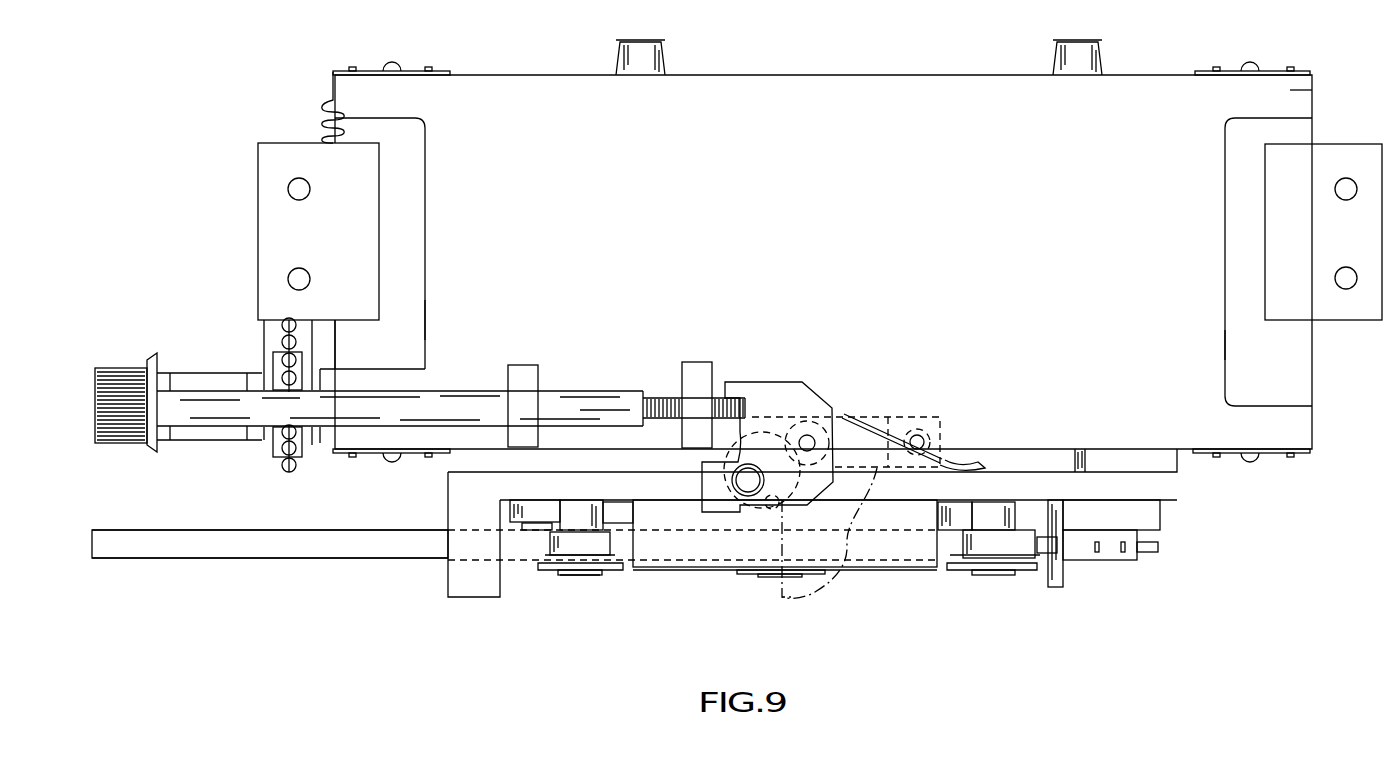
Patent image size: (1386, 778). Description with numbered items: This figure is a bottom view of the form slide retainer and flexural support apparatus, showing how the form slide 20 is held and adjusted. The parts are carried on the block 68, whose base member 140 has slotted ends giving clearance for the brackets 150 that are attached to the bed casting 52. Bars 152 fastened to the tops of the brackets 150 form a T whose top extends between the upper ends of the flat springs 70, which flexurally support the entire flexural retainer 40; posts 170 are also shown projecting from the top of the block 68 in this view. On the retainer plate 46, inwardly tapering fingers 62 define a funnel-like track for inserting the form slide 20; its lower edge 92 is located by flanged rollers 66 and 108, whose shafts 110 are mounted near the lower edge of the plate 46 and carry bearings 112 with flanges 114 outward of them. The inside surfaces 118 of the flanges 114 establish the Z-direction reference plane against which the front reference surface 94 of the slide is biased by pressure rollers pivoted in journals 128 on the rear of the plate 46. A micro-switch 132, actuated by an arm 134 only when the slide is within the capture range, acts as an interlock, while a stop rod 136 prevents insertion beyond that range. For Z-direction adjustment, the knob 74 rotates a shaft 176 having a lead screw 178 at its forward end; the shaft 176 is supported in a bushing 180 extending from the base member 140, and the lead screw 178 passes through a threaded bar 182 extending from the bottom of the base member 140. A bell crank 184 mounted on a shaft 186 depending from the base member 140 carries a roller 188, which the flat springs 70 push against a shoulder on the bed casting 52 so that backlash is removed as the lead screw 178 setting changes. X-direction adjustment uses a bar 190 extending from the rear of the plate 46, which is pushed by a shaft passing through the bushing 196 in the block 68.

The form slide 20 is at (210, 558).
The flexural retainer 40 is at (1315, 388).
The retainer plate 46 is at (1160, 488).
The bed casting 52 is at (797, 590).
The fingers 62 is at (475, 590).
The flanged bearing roller 66 is at (578, 577).
The block 68 is at (1295, 94).
The flat springs 70 is at (415, 71).
The knob 74 is at (132, 362).
The edge 92 is at (408, 550).
The front reference surface 94 is at (320, 560).
The flanged bearing roller 108 is at (985, 595).
The shafts 110 is at (580, 505).
The bearings 112 is at (548, 545).
The flanges 114 is at (605, 571).
The inside surfaces 118 is at (560, 560).
The journals 128 is at (945, 432).
The micro-switch 132 is at (1120, 560).
The arm 134 is at (1050, 537).
The stop rod 136 is at (1065, 580).
The base member 140 is at (812, 87).
The brackets 150 is at (275, 255).
The bars 152 is at (400, 296).
The post 170 is at (660, 42).
The shaft 176 is at (430, 400).
The lead screw 178 is at (685, 400).
The bushing 180 is at (522, 372).
The threaded bar 182 is at (698, 362).
The bell crank 184 is at (780, 385).
The shaft 186 is at (722, 481).
The roller 188 is at (805, 425).
The bar 190 is at (840, 465).
The bushing 196 is at (400, 375).